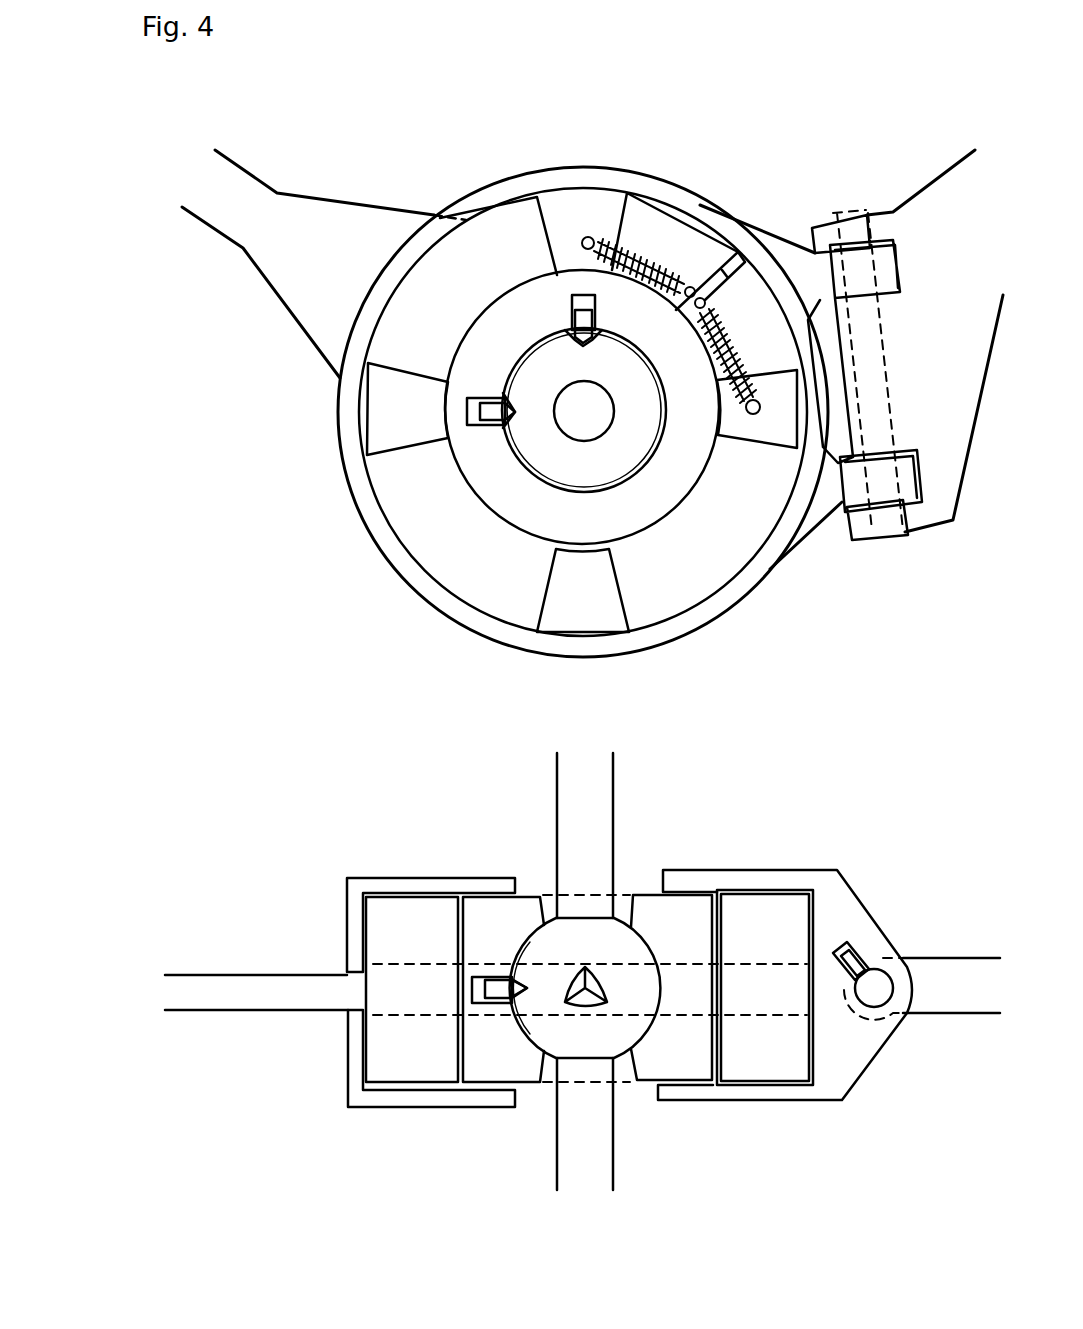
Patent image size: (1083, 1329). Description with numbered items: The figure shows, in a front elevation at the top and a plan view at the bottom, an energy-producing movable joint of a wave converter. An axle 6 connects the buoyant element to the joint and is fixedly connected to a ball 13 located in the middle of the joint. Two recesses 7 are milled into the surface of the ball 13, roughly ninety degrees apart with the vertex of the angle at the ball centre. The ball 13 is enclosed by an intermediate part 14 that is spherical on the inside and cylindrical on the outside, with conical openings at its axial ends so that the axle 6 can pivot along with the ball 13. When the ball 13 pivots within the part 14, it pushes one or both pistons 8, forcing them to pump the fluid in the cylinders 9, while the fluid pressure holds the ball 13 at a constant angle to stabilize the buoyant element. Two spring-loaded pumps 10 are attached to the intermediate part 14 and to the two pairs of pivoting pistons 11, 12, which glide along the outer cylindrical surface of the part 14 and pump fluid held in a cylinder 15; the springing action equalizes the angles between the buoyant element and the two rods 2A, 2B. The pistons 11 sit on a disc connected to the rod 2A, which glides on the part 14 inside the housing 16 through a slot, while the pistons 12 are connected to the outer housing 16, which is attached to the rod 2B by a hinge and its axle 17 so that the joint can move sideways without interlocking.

The rod 2A is at (268, 988).
The rod 2B is at (972, 968).
The axle 6 is at (587, 405).
The milled-down recess 7 is at (577, 307).
The piston 8 is at (857, 950).
The cylinder filled with fluid 9 is at (560, 285).
The spring-loaded pump 10 is at (745, 370).
The pivoting pistons 11 is at (388, 930).
The pivoting pistons 12 is at (568, 612).
The ball 13 is at (612, 940).
The intermediate part 14 is at (665, 915).
The cylinder filled with fluid 15 is at (735, 540).
The outer housing 16 is at (838, 868).
The axle 17 is at (887, 963).